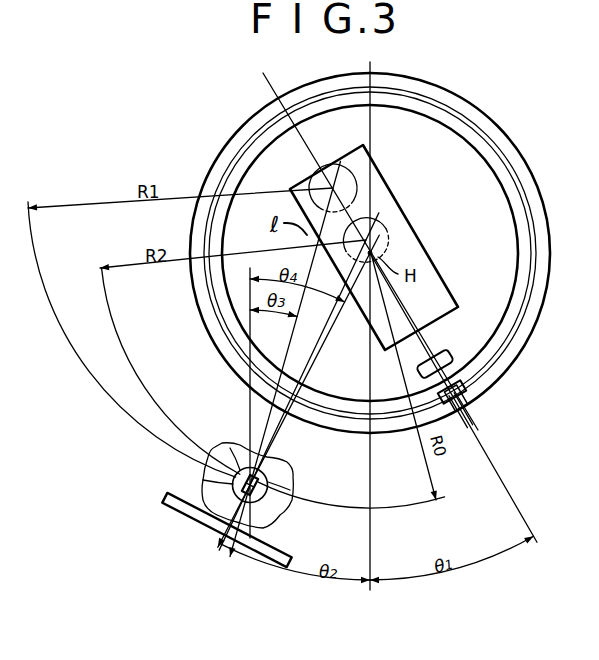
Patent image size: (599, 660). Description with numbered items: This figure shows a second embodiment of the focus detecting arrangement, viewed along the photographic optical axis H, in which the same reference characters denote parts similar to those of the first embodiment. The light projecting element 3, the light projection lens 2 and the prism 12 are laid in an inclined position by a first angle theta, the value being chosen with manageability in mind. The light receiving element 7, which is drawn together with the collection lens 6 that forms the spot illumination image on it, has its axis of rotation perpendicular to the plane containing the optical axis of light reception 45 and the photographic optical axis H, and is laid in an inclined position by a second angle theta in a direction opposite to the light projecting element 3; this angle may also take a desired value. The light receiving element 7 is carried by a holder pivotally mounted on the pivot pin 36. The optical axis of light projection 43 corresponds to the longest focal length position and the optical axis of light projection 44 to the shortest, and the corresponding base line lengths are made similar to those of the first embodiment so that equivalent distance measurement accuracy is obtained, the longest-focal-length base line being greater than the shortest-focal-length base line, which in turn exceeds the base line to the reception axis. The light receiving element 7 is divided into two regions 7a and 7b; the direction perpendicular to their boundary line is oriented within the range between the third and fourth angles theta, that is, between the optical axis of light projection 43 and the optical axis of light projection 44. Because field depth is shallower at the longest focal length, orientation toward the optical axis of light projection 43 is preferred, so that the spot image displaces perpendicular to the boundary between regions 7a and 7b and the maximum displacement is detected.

The projection lens 2 is at (443, 350).
The light projecting element 3 is at (478, 382).
The collection lens 6 is at (280, 514).
The light receiving element 7 is at (272, 457).
The light receiving region 7a is at (232, 450).
The light receiving region 7b is at (215, 485).
The prism 12 is at (443, 278).
The pivot pin 36 is at (268, 558).
The optical axis of light projection 43 is at (330, 164).
The optical axis of light projection 44 is at (366, 217).
The optical axis of light reception 45 is at (269, 480).